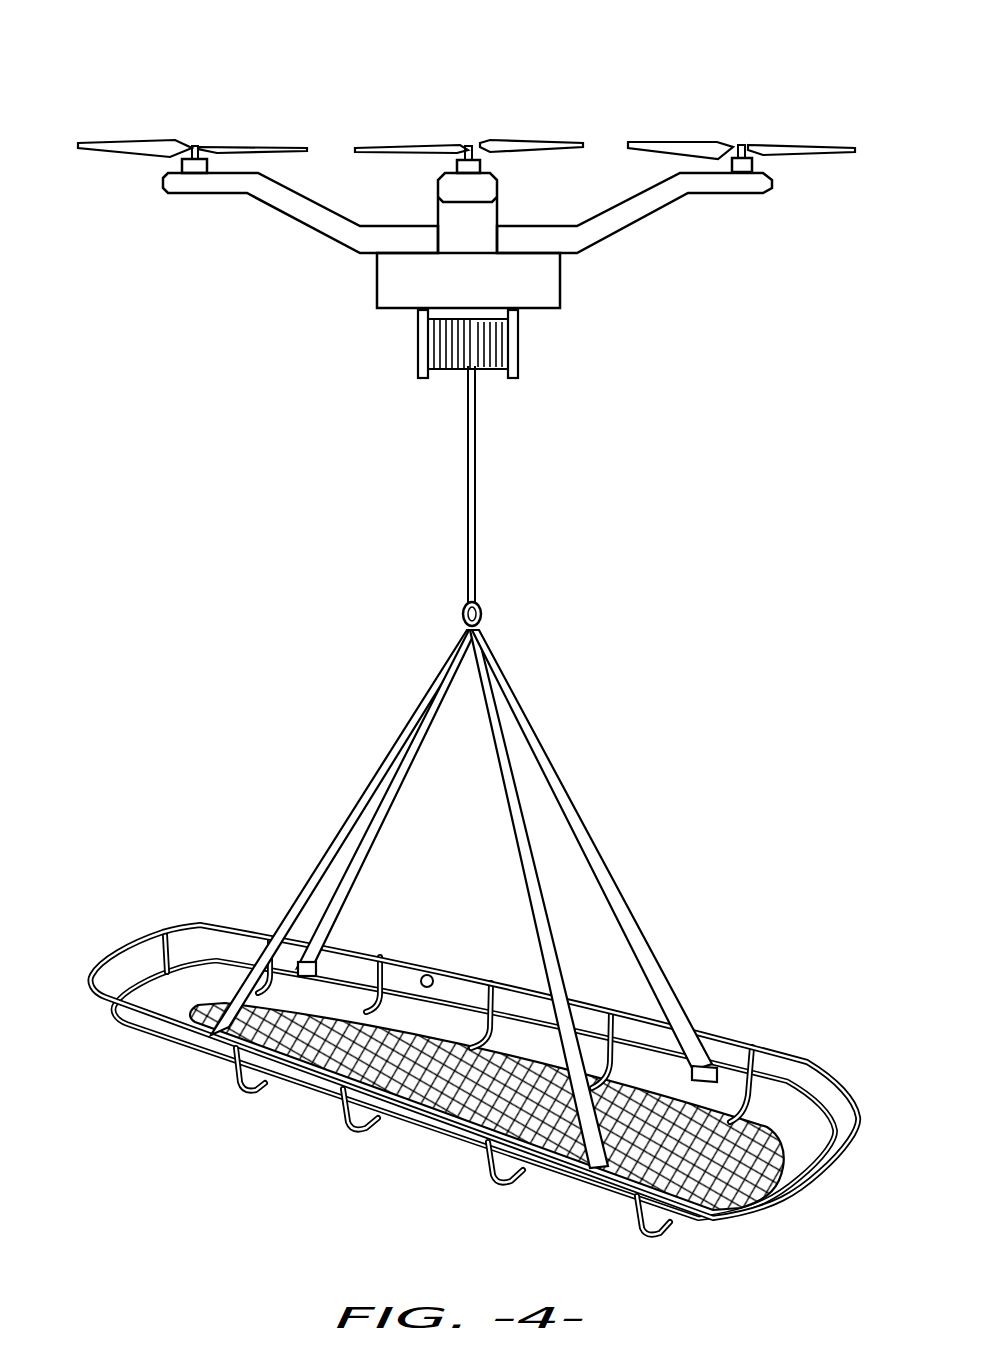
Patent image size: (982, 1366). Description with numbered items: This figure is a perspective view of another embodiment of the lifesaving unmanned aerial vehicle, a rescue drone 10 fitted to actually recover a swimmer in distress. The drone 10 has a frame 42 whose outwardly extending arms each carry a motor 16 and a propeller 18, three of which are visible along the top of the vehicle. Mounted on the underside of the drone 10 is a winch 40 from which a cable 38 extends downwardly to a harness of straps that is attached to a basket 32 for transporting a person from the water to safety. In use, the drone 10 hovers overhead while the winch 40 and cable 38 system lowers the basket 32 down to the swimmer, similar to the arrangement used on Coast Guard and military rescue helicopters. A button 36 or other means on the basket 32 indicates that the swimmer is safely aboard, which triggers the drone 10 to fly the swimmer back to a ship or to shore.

The rescue drone 10 is at (276, 80).
The motor 16 is at (172, 163).
The propeller 18 is at (137, 142).
The frame 42 is at (617, 215).
The winch 40 is at (420, 348).
The cable 38 is at (477, 542).
The button 36 is at (425, 972).
The basket 32 is at (772, 1050).